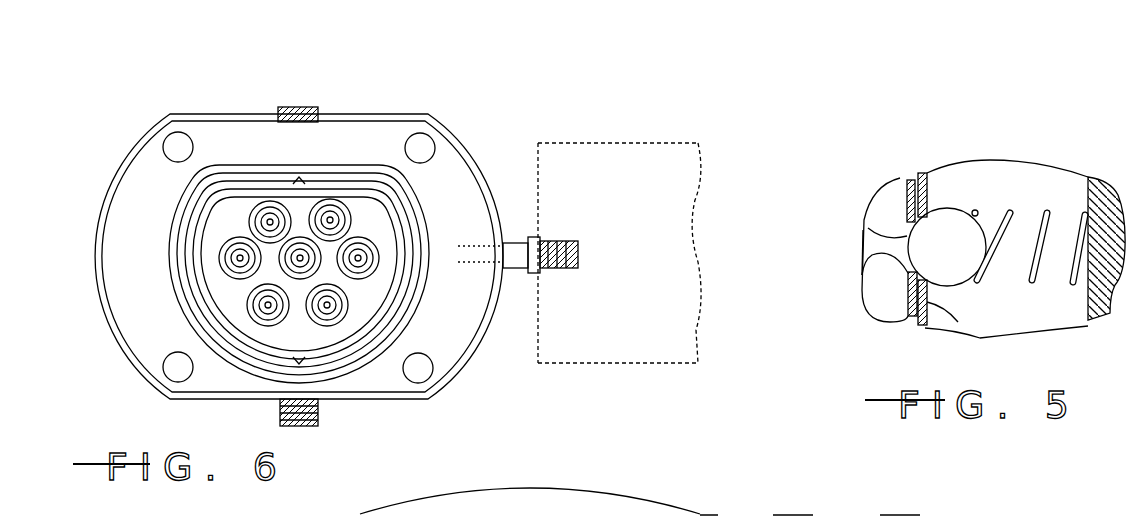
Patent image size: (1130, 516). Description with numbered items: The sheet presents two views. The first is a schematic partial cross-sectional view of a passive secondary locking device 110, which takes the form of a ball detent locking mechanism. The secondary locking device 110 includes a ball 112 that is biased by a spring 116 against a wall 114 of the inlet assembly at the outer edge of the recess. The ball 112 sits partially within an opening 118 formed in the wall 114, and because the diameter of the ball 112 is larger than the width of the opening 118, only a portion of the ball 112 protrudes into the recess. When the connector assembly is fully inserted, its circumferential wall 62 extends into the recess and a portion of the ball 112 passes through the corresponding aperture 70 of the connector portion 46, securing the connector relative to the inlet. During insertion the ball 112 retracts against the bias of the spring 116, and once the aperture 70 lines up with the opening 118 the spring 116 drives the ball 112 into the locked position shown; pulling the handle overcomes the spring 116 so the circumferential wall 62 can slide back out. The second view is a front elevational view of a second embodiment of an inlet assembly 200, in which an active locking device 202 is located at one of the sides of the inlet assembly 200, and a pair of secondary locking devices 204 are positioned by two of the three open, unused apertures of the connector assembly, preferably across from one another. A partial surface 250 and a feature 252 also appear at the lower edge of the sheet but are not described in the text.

In FIG. 6, the inlet assembly 200 is at (470, 141).
In FIG. 6, the active locking device 202 is at (595, 143).
In FIG. 6, the secondary locking devices 204 is at (320, 113).
In FIG. 6, the vehicle body surface 250 is at (627, 483).
In FIG. 6, the opening 252 is at (995, 515).
In FIG. 5, the secondary locking device 110 is at (971, 229).
In FIG. 5, the circumferential wall 62 is at (910, 178).
In FIG. 5, the ball 112 is at (940, 225).
In FIG. 5, the spring 116 is at (1015, 210).
In FIG. 5, the connector portion 46 is at (890, 197).
In FIG. 5, the opening 118 is at (868, 220).
In FIG. 5, the aperture 70 is at (862, 278).
In FIG. 5, the wall 114 is at (957, 328).